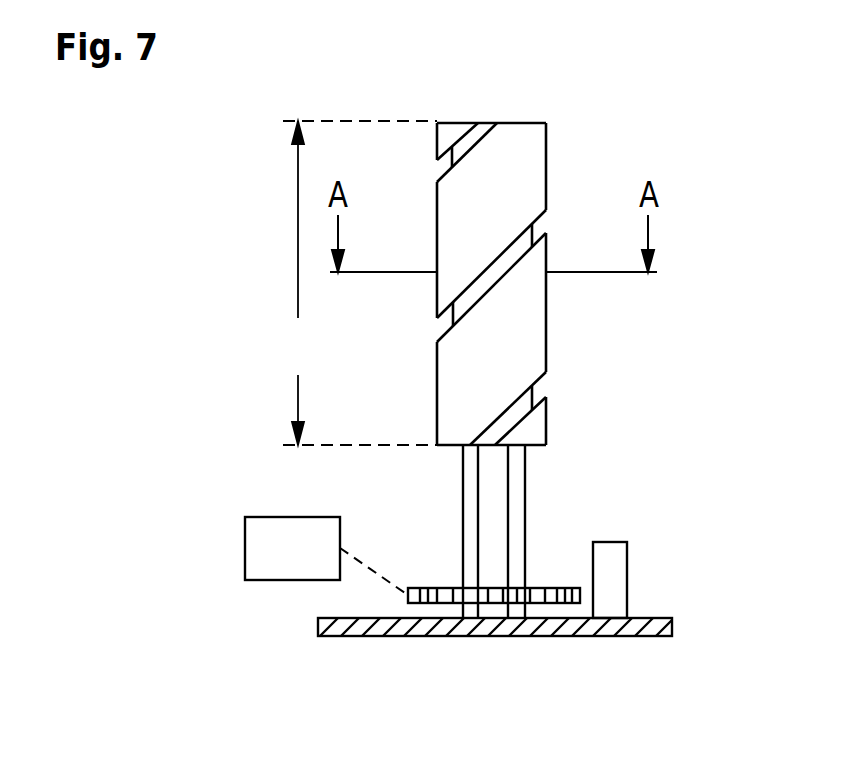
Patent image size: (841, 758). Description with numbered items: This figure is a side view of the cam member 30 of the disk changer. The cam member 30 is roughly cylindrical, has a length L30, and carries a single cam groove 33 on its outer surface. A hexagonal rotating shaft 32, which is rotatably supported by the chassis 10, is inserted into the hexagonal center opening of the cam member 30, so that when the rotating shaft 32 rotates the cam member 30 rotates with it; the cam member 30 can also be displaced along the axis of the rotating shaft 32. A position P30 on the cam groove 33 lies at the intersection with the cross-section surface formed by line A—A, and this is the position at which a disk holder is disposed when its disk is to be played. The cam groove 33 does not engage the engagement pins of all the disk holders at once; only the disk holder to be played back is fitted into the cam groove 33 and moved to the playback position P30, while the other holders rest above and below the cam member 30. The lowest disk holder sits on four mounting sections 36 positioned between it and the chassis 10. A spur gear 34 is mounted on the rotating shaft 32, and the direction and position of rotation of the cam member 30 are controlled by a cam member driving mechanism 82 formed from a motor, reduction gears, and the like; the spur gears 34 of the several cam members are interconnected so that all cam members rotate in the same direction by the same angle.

The cam member 30 is at (552, 251).
The position P30 is at (537, 276).
The cam groove 33 is at (569, 402).
The rotating shaft 32 is at (565, 520).
The spur gear 34 is at (456, 532).
The mounting section 36 is at (651, 551).
The chassis 10 is at (503, 664).
The cam member driving mechanism 82 is at (325, 555).
The length L30 is at (353, 283).